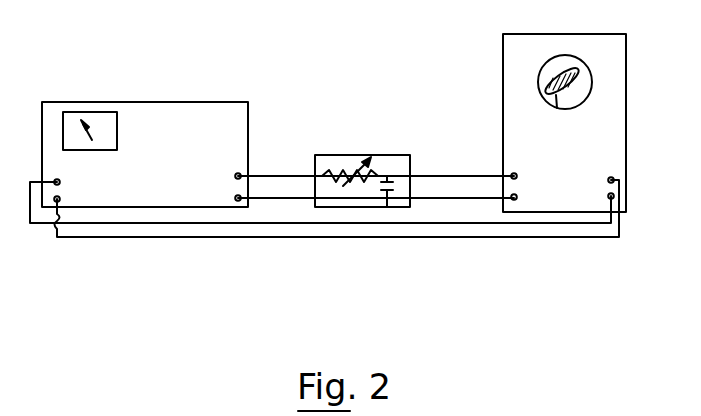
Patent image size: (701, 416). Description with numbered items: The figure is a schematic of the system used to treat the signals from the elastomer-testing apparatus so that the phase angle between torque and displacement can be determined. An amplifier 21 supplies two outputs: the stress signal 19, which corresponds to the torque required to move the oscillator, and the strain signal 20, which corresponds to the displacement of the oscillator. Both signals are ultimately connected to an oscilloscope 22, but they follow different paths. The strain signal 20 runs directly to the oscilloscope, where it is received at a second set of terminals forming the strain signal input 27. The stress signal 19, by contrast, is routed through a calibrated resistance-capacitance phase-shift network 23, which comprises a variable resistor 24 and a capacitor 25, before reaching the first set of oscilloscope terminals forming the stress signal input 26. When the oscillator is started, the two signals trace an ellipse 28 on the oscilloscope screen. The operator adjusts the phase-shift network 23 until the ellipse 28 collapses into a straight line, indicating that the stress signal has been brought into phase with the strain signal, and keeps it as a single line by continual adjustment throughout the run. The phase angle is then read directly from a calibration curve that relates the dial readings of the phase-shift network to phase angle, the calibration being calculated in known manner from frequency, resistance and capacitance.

The stress signal 19 is at (278, 196).
The strain signal 20 is at (62, 182).
The amplifier 21 is at (176, 110).
The oscilloscope 22 is at (618, 70).
The calibrated resistance-capacitance phase-shift network 23 is at (390, 158).
The variable resistor 24 is at (339, 170).
The capacitor 25 is at (396, 190).
The stress signal input 26 is at (519, 195).
The strain signal input 27 is at (606, 181).
The ellipse 28 is at (554, 108).